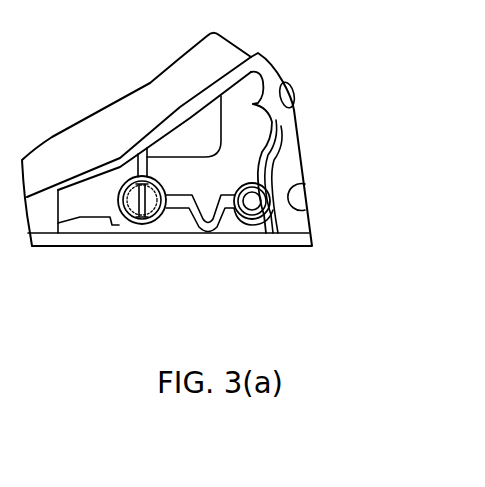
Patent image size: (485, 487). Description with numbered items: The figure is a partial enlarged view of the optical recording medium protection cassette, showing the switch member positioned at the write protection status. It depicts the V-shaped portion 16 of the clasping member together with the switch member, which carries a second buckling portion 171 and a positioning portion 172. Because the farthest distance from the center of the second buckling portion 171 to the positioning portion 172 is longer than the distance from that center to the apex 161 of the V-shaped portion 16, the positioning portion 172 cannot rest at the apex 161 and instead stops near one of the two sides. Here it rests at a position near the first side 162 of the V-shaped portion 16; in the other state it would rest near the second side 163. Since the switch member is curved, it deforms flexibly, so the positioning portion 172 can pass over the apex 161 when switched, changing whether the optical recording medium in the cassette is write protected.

The V-shaped portion 16 is at (339, 152).
The apex 161 is at (258, 160).
The first side 162 is at (274, 140).
The second side 163 is at (266, 186).
The second buckling portion 171 is at (128, 221).
The positioning portion 172 is at (245, 218).